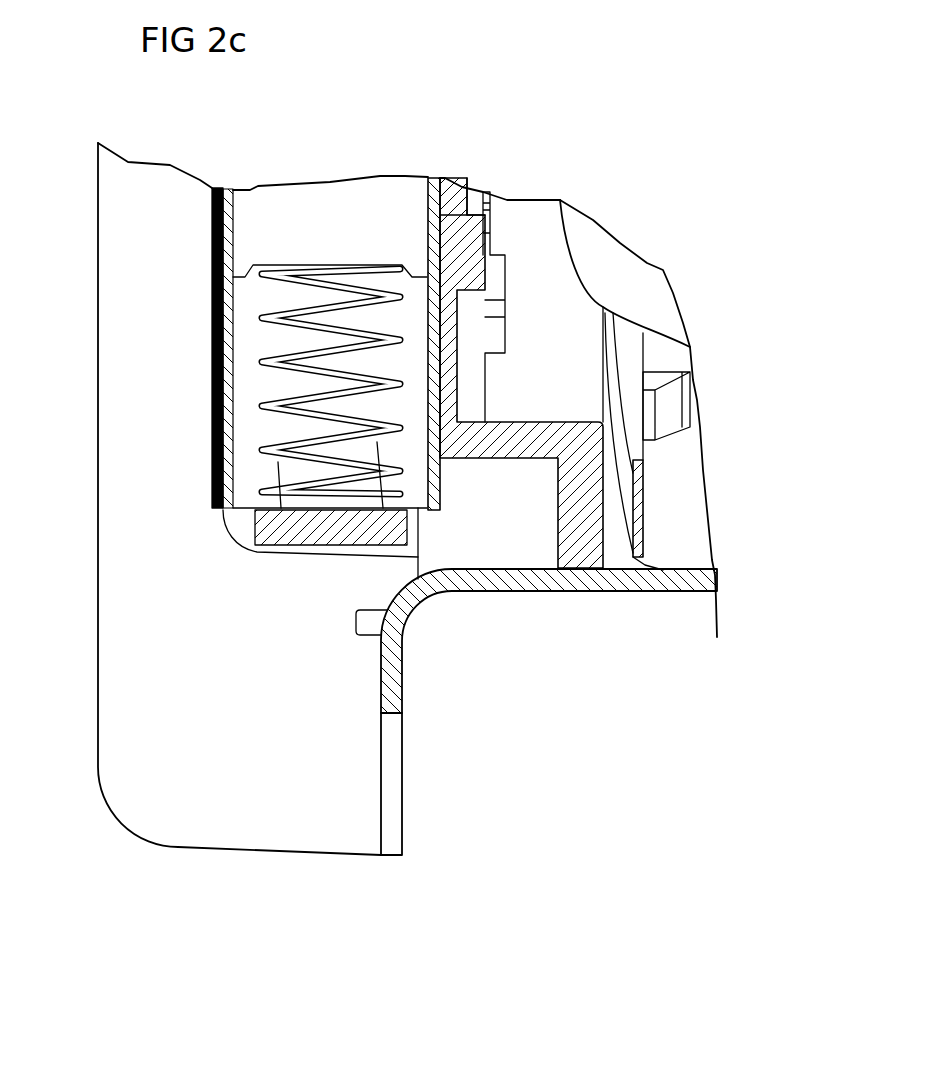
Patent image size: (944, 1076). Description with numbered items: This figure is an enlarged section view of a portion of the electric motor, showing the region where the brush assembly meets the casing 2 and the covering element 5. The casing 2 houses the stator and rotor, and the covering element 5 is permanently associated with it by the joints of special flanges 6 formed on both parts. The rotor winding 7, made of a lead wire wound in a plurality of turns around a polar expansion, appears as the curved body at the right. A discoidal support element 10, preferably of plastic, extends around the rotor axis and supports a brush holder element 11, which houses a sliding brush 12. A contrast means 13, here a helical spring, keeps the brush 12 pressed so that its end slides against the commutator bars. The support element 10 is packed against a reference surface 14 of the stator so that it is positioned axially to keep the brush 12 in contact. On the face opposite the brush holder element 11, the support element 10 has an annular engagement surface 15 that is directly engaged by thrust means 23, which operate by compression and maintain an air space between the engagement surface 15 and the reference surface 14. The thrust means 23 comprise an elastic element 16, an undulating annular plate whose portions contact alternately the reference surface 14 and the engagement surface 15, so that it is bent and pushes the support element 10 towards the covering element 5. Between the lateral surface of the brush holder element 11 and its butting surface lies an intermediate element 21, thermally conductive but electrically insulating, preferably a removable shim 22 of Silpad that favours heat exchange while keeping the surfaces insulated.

The casing 2 is at (693, 580).
The covering element 5 is at (267, 857).
The flanges 6 is at (387, 783).
The winding 7 is at (613, 260).
The support element 10 is at (530, 462).
The brush holder element 11 is at (440, 497).
The sliding brush 12 is at (375, 212).
The contrast means 13 is at (272, 335).
The reference surface 14 is at (633, 408).
The engagement surface 15 is at (607, 537).
The elastic element 16 is at (647, 468).
The intermediate element 21 is at (215, 513).
The removable shim 22 is at (212, 488).
The thrust means 23 is at (623, 370).